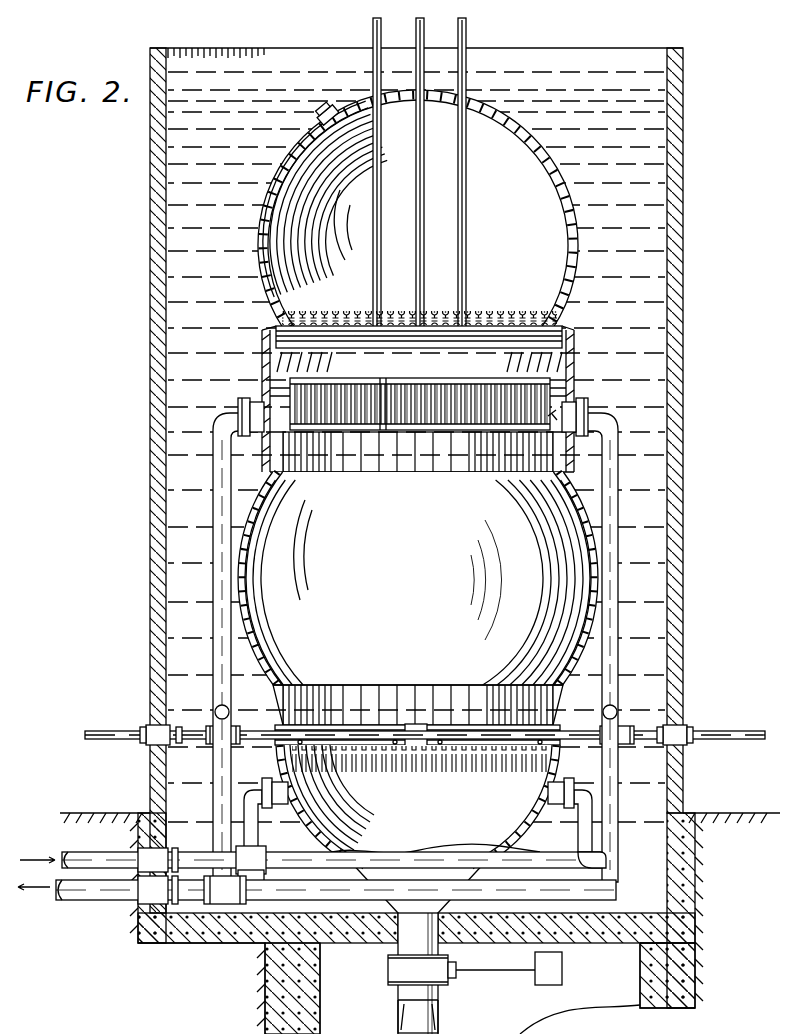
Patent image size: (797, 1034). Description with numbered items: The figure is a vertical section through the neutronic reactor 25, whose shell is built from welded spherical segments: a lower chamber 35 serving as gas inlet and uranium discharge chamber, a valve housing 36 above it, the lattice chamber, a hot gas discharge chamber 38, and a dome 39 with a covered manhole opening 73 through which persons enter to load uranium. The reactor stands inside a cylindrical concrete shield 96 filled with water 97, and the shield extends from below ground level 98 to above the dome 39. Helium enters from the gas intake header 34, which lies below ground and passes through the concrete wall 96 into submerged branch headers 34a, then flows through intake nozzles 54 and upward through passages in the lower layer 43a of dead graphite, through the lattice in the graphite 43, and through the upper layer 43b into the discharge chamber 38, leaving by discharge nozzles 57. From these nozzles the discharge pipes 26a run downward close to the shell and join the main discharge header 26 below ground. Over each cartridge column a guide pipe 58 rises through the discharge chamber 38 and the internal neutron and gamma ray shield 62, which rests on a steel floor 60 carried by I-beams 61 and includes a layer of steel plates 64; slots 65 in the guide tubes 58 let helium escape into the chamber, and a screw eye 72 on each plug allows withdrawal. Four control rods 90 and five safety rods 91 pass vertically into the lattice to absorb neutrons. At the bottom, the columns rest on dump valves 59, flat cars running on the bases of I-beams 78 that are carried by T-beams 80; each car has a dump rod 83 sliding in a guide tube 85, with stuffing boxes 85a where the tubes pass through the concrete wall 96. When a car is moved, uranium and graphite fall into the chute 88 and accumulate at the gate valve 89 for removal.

The reactor 25 is at (245, 508).
The main discharge header 26 is at (86, 896).
The discharge pipes 26a is at (212, 578).
The gas intake header 34 is at (78, 858).
The branch headers 34a is at (256, 832).
The lower chamber 35 is at (576, 832).
The valve housing 36 is at (556, 704).
The hot gas discharge chamber 38 is at (286, 396).
The dome 39 is at (576, 266).
The graphite 43 is at (398, 534).
The lower layer of dead graphite 43a is at (368, 694).
The upper layer of dead graphite 43b is at (430, 461).
The intake nozzles 54 is at (320, 788).
The discharge nozzles 57 is at (246, 412).
The guide pipe 58 is at (360, 432).
The dump valves 59 is at (428, 730).
The steel floor 60 is at (310, 382).
The I-beams 61 is at (562, 386).
The internal neutron and gamma ray shield 62 is at (574, 356).
The steel plates 64 is at (578, 338).
The slots 65 is at (386, 384).
The screw eye 72 is at (512, 317).
The covered manhole opening 73 is at (333, 110).
The I-beams 78 is at (556, 748).
The T-beams 80 is at (426, 768).
The dump rod 83 is at (214, 738).
The guide tubes 85 is at (103, 739).
The stuffing boxes 85a is at (150, 728).
The chute 88 is at (352, 856).
The gate valve 89 is at (400, 972).
The control rods 90 is at (422, 260).
The safety rods 91 is at (380, 226).
The concrete shield 96 is at (665, 516).
The water 97 is at (655, 272).
The ground level 98 is at (112, 813).